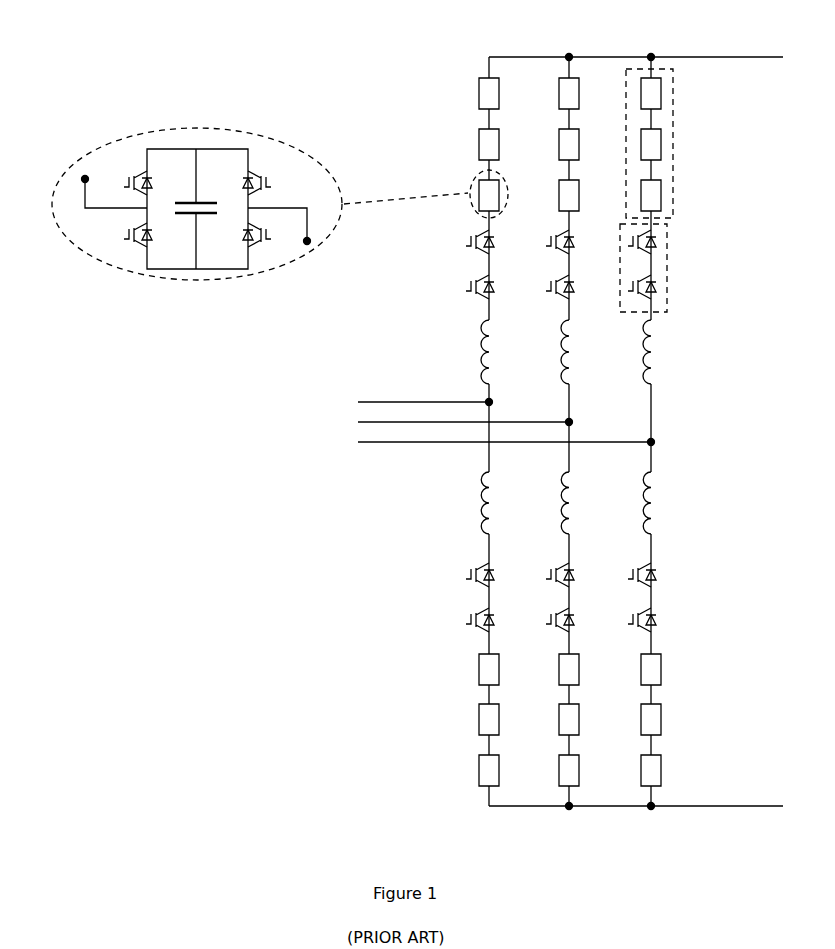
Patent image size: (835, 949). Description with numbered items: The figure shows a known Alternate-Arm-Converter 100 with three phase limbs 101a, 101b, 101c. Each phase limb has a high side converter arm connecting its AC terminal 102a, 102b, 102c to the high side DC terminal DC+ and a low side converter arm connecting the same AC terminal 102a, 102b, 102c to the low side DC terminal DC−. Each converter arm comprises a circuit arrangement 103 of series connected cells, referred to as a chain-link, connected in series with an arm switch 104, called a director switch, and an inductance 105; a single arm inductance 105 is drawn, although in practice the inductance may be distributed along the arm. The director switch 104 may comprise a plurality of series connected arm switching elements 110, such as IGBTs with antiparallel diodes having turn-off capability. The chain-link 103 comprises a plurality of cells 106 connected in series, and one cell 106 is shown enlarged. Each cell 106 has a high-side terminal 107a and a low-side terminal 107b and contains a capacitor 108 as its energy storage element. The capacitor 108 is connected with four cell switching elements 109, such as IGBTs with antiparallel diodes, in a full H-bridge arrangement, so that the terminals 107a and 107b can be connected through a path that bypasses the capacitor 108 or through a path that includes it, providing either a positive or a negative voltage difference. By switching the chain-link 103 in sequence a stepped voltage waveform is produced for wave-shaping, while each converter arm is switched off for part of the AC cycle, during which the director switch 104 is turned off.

The Alternate-Arm-Converter 100 is at (258, 32).
The phase limb 101a is at (504, 43).
The phase limb 101b is at (593, 43).
The phase limb 101c is at (670, 43).
The AC terminal 102a is at (486, 401).
The AC terminal 102b is at (602, 408).
The AC terminal 102c is at (653, 442).
The circuit arrangement of series connected cells 103 is at (675, 133).
The arm switch 104 is at (668, 262).
The inductance 105 is at (655, 345).
The cell 106 is at (480, 86).
The terminal 107a is at (85, 179).
The terminal 107b is at (308, 243).
The capacitor 108 is at (203, 200).
The cell switching element 109 is at (260, 172).
The arm switching element 110 is at (477, 277).